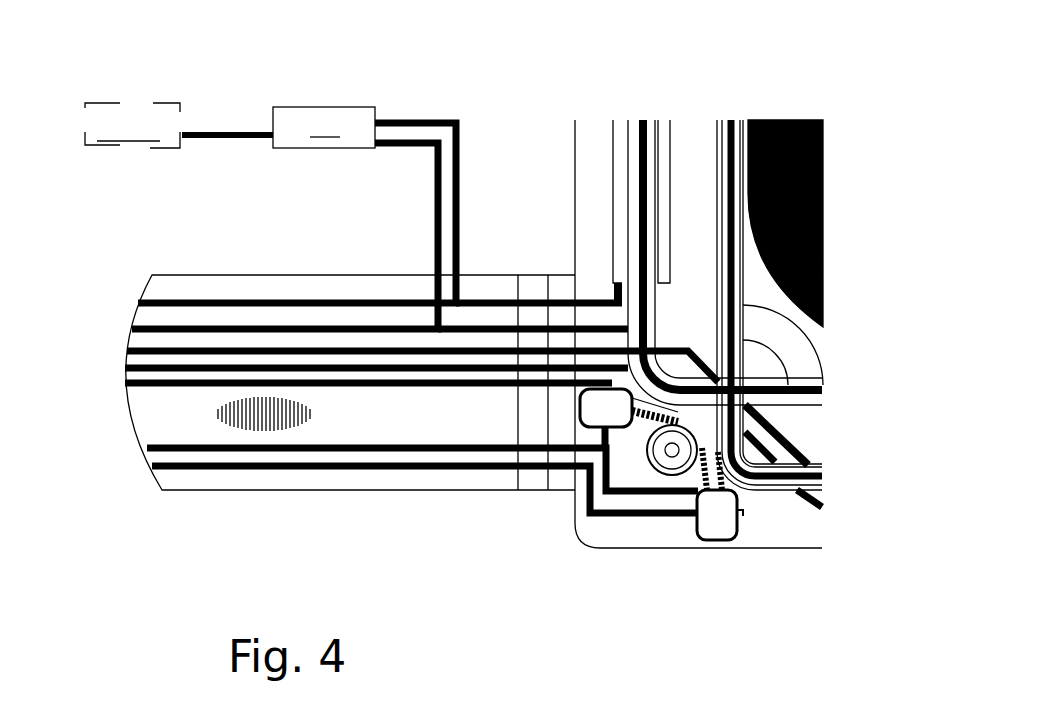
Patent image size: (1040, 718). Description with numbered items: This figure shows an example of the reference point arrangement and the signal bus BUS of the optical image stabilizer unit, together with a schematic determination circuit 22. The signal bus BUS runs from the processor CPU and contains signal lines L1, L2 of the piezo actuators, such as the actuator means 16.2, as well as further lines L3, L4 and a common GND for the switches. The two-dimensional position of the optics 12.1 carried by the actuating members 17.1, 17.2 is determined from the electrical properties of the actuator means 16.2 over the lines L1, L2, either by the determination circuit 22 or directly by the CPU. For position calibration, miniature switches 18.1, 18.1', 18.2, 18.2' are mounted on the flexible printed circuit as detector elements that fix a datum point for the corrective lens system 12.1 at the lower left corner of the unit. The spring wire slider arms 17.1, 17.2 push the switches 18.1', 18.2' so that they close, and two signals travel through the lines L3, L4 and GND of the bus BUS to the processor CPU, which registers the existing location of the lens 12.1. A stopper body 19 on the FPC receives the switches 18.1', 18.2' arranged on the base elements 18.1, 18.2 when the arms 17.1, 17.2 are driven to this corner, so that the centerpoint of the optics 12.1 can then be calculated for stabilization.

The determination circuit 22 is at (324, 127).
The actuator means 16.2 is at (618, 200).
The corrective lens system 12.1 is at (783, 130).
The spring wire slider arm 17.1 is at (758, 483).
The spring wire slider arm 17.2 is at (822, 403).
The miniature switch base element 18.1 is at (685, 577).
The miniature switch 18.1' is at (632, 555).
The miniature switch base element 18.2 is at (496, 475).
The miniature switch 18.2' is at (556, 499).
The stopper body 19 is at (660, 456).
The processor CPU is at (179, 125).
The signal bus BUS is at (216, 268).
The signal line L1 is at (127, 367).
The signal line L2 is at (132, 328).
The signal line L3 is at (122, 382).
The signal line L4 is at (152, 465).
The common ground GND is at (147, 447).